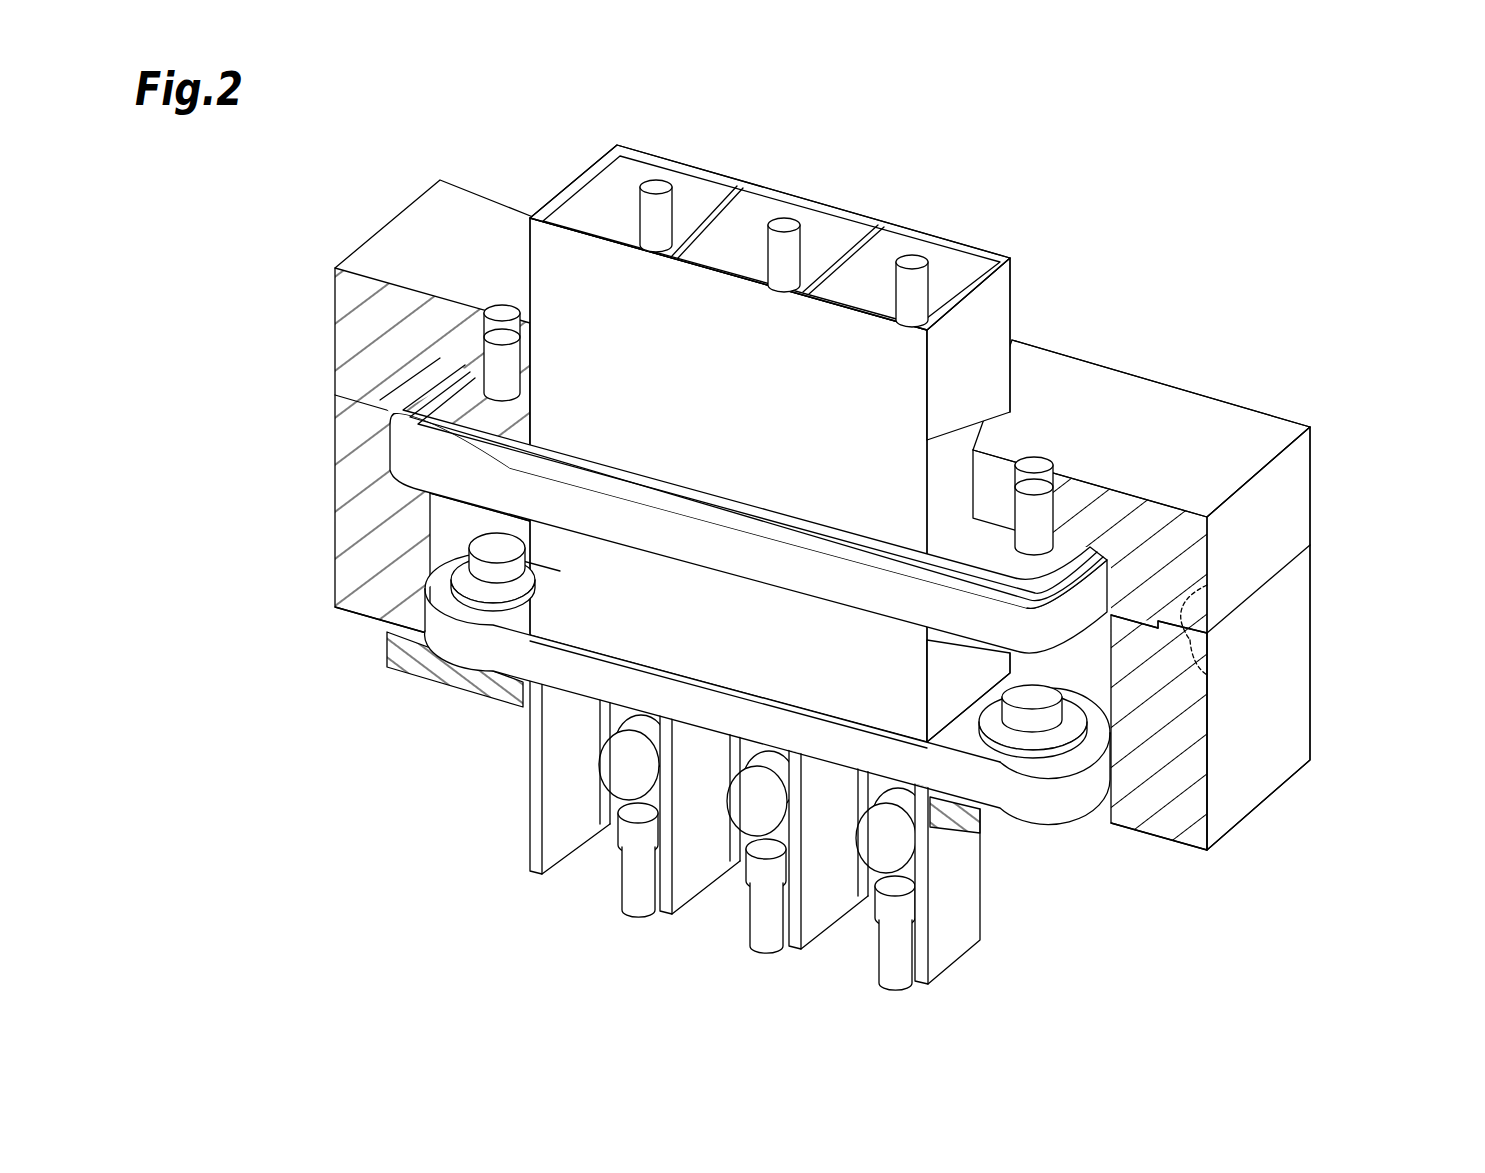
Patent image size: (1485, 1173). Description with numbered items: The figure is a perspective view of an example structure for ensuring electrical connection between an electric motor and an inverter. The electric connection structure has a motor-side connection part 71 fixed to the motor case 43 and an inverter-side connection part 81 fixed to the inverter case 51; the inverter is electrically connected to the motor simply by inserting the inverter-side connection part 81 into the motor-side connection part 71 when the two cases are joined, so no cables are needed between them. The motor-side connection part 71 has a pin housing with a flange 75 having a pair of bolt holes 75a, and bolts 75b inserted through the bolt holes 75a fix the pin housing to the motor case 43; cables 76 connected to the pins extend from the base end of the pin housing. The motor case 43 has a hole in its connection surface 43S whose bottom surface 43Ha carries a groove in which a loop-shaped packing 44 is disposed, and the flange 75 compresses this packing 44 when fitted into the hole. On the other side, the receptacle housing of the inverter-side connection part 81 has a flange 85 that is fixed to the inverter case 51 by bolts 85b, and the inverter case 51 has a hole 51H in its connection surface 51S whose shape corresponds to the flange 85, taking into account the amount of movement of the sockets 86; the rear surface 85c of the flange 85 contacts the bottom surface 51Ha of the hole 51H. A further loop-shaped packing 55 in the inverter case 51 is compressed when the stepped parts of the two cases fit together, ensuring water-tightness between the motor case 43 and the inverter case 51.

The motor case 43 is at (335, 332).
The packing 44 is at (1128, 597).
The inverter case 51 is at (335, 542).
The connection surface 51S is at (1165, 626).
The connection surface 43S is at (1190, 655).
The packing 55 is at (1200, 700).
The hole 51H is at (1195, 705).
The bottom surface 43Ha is at (1180, 550).
The bottom surface 51Ha is at (1040, 832).
The motor-side connection part 71 is at (985, 243).
The cables 76 is at (656, 194).
The flange 75 is at (398, 442).
The bolt holes 75a is at (500, 330).
The bolts 75b is at (510, 345).
The inverter-side connection part 81 is at (528, 792).
The flange 85 is at (440, 602).
The bolts 85b is at (497, 556).
The rear surface 85c is at (412, 662).
The sockets 86 is at (1045, 823).